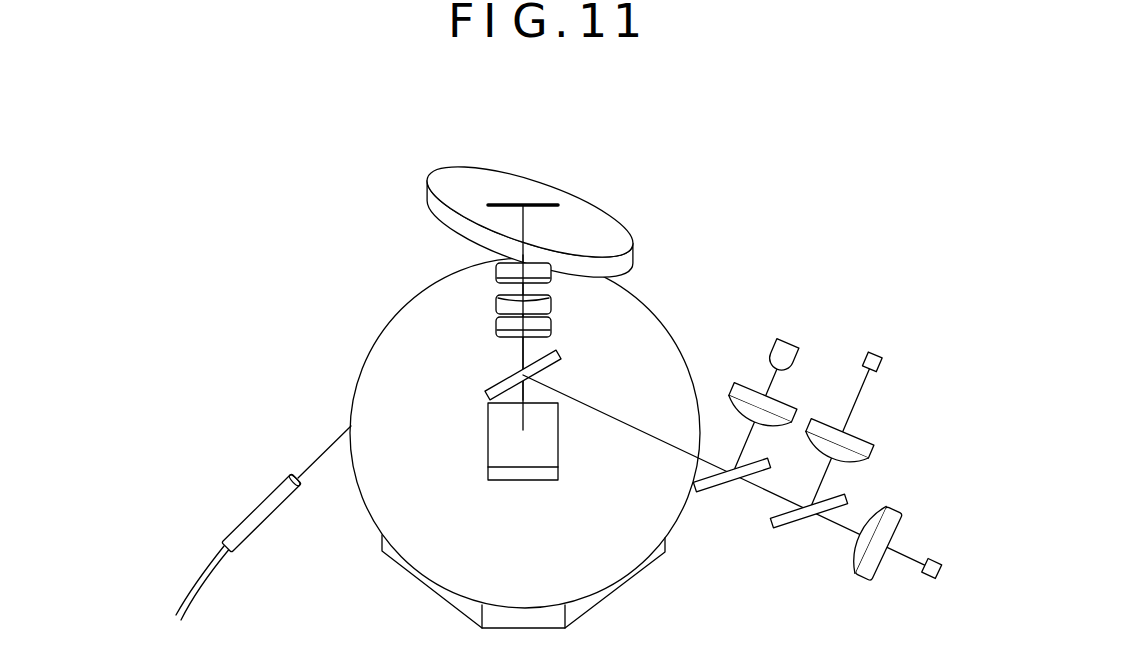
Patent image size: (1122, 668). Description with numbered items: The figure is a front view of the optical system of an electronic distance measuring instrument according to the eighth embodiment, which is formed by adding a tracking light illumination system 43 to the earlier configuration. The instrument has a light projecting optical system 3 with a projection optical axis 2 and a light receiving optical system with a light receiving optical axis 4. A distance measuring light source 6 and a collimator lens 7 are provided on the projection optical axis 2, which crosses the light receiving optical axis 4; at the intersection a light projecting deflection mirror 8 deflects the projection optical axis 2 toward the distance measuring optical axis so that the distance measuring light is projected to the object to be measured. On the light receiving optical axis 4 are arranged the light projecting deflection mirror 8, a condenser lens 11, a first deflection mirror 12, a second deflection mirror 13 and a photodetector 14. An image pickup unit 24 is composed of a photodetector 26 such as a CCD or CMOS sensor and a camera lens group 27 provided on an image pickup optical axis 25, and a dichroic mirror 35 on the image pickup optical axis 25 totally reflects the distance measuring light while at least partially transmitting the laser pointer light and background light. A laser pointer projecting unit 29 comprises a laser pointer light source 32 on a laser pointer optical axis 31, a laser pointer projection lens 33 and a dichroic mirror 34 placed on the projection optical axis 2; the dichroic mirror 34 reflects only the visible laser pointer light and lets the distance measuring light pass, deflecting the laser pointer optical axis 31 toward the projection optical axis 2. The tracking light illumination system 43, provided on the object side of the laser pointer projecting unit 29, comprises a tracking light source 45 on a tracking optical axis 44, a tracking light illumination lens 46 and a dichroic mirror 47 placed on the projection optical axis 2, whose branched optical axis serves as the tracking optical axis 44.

The projection optical axis 2 is at (910, 550).
The light projecting optical system 3 is at (910, 569).
The light receiving optical axis 4 is at (318, 447).
The distance measuring light source 6 is at (940, 553).
The collimator lens 7 is at (867, 576).
The light projecting deflection mirror 8 is at (522, 481).
The condenser lens 11 is at (648, 307).
The first deflection mirror 12 is at (438, 598).
The second deflection mirror 13 is at (437, 203).
The photodetector 14 is at (256, 505).
The image pickup unit 24 is at (508, 308).
The image pickup optical axis 25 is at (527, 223).
The photodetector 26 is at (535, 203).
The camera lens group 27 is at (551, 302).
The laser pointer projecting unit 29 is at (886, 405).
The laser pointer optical axis 31 is at (859, 390).
The laser pointer light source 32 is at (880, 353).
The laser pointer projection lens 33 is at (873, 448).
The dichroic mirror 34 is at (787, 532).
The dichroic mirror 35 is at (488, 384).
The tracking light illumination system 43 is at (761, 377).
The tracking optical axis 44 is at (773, 385).
The tracking light source 45 is at (787, 342).
The tracking light illumination lens 46 is at (733, 412).
The dichroic mirror 47 is at (712, 495).